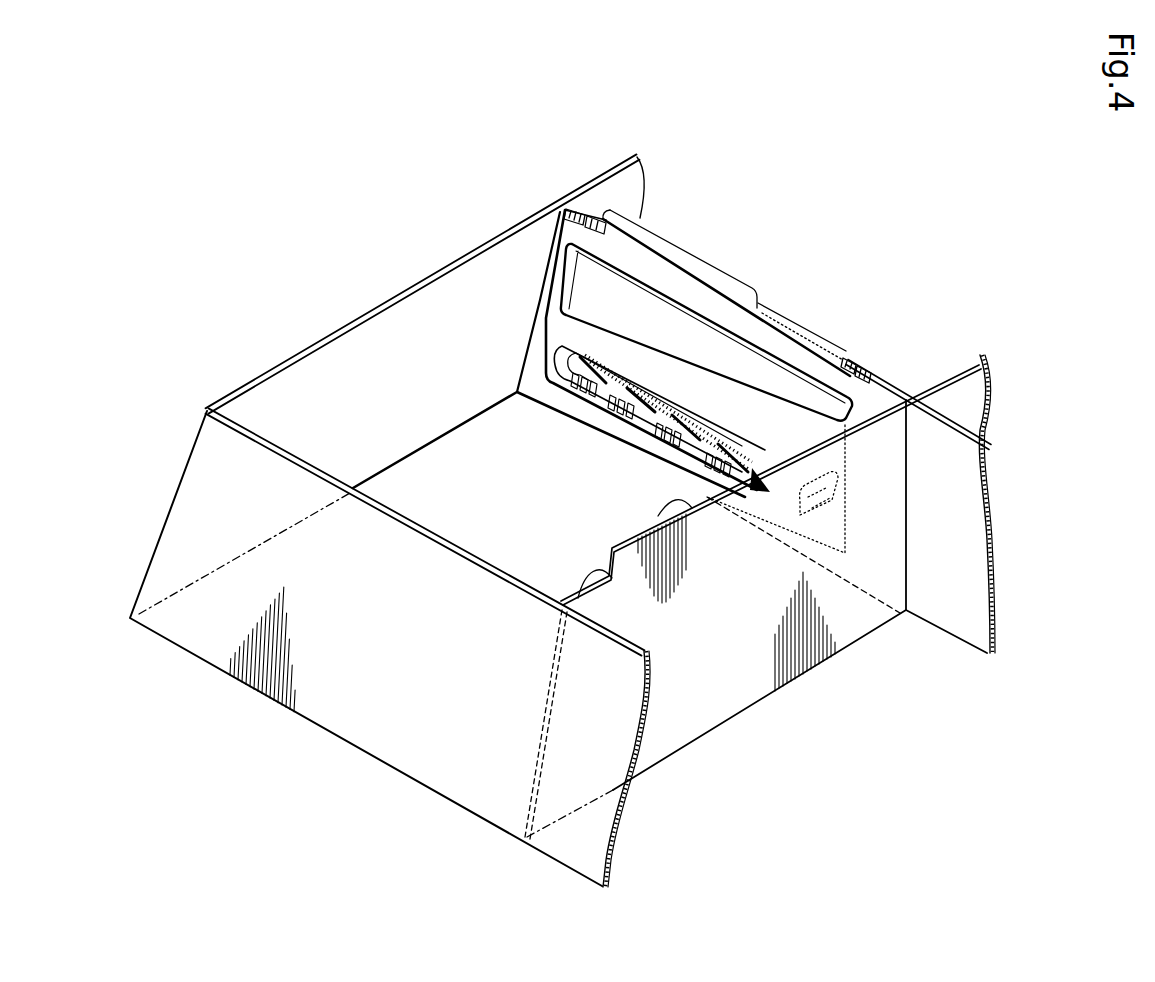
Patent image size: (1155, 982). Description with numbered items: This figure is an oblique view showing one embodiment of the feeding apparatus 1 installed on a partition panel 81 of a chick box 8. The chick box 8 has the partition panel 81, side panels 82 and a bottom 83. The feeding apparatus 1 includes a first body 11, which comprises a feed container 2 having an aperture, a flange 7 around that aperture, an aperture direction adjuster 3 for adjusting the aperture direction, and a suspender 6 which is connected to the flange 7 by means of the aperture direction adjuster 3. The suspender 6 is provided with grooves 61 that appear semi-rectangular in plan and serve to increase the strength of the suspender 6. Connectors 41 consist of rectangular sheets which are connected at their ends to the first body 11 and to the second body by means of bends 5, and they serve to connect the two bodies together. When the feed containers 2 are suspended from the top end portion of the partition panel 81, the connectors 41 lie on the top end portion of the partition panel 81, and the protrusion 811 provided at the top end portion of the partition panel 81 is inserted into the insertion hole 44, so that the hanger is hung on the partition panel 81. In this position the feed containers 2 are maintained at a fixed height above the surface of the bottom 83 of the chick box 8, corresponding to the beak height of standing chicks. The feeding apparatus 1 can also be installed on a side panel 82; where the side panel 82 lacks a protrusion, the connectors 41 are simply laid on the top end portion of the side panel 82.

The feeding apparatus 1 is at (780, 270).
The feed container 2 is at (555, 370).
The aperture direction adjuster 3 is at (555, 308).
The bend 5 is at (572, 210).
The suspender 6 is at (565, 262).
The flange 7 is at (545, 348).
The chick box 8 is at (322, 268).
The first body 11 is at (586, 420).
The connector 41 is at (597, 218).
The insertion hole 44 is at (793, 325).
The groove 61 is at (560, 217).
The partition panel 81 is at (580, 220).
The side panel 82 is at (248, 385).
The bottom 83 is at (410, 740).
The protrusion 811 is at (688, 252).